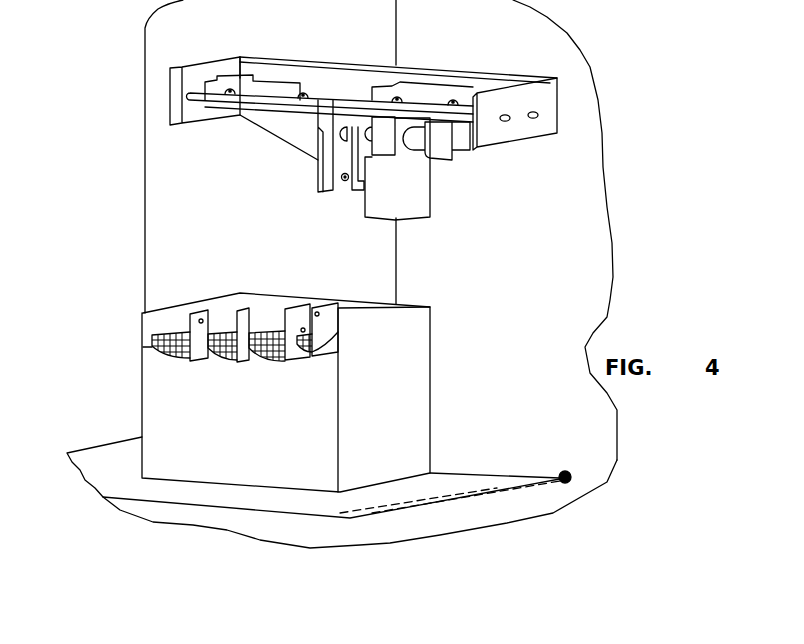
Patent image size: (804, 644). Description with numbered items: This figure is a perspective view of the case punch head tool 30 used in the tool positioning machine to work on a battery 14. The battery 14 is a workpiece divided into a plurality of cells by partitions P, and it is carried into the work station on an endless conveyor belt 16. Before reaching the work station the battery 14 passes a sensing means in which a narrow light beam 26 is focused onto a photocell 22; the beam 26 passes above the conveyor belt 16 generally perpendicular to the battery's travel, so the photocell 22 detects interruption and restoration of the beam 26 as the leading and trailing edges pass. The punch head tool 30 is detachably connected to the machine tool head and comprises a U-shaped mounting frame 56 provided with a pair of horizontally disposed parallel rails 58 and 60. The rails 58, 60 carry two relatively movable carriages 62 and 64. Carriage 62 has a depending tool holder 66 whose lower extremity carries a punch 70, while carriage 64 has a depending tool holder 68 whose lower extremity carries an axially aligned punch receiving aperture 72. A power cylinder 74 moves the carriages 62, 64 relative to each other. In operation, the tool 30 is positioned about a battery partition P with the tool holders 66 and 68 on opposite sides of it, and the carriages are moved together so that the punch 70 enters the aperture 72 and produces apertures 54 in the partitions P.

The battery 14 is at (402, 422).
The conveyor belt 16 is at (522, 512).
The photocell 22 is at (571, 477).
The light beam 26 is at (488, 488).
The case punch head tool 30 is at (282, 158).
The apertures 54 is at (314, 313).
The U-shaped mounting frame 56 is at (548, 88).
The rail 58 is at (508, 121).
The rail 60 is at (538, 115).
The carriage 62 is at (286, 84).
The carriage 64 is at (430, 93).
The tool holder 66 is at (323, 168).
The tool holder 68 is at (382, 178).
The punch 70 is at (342, 181).
The punch receiving aperture 72 is at (353, 191).
The power cylinder 74 is at (441, 150).
The partitions P is at (246, 348).